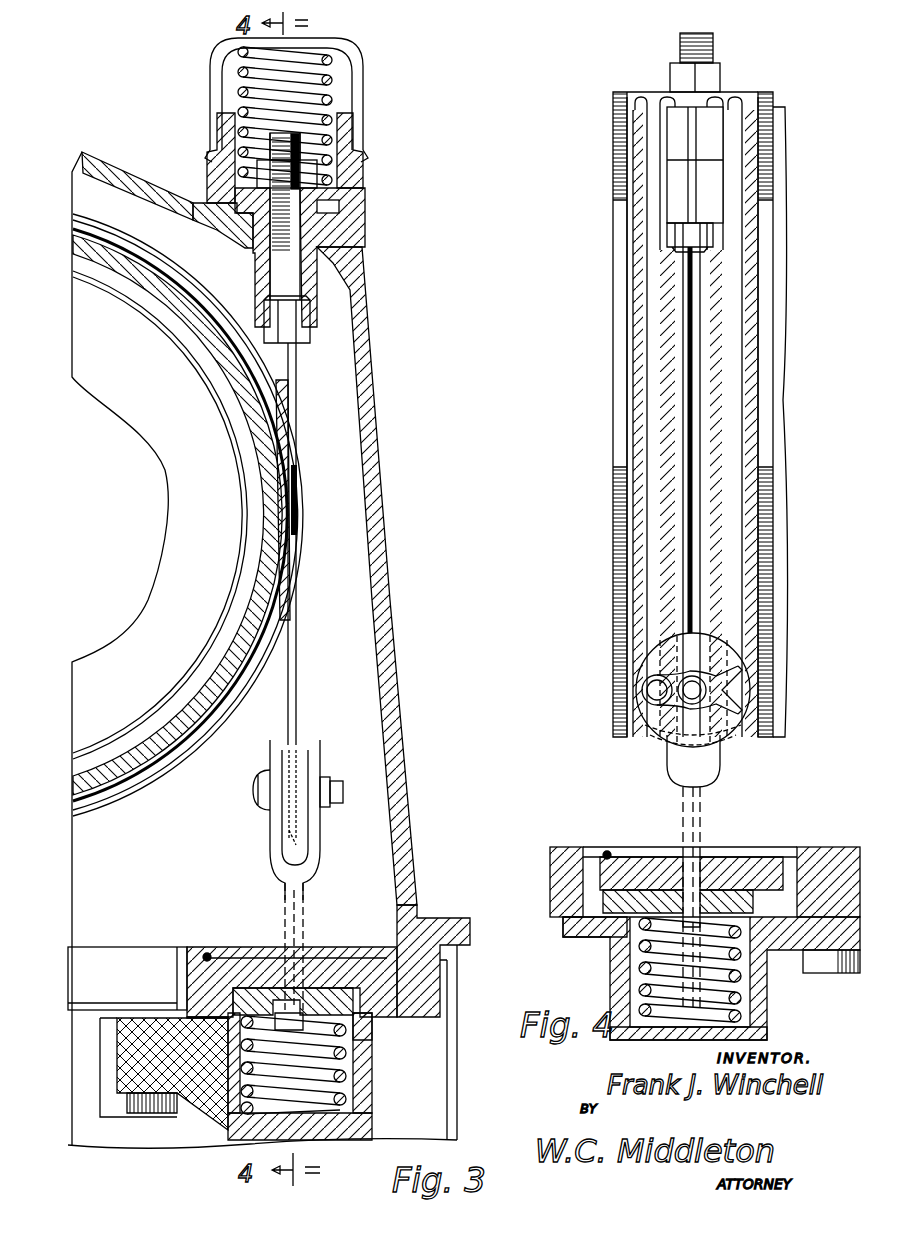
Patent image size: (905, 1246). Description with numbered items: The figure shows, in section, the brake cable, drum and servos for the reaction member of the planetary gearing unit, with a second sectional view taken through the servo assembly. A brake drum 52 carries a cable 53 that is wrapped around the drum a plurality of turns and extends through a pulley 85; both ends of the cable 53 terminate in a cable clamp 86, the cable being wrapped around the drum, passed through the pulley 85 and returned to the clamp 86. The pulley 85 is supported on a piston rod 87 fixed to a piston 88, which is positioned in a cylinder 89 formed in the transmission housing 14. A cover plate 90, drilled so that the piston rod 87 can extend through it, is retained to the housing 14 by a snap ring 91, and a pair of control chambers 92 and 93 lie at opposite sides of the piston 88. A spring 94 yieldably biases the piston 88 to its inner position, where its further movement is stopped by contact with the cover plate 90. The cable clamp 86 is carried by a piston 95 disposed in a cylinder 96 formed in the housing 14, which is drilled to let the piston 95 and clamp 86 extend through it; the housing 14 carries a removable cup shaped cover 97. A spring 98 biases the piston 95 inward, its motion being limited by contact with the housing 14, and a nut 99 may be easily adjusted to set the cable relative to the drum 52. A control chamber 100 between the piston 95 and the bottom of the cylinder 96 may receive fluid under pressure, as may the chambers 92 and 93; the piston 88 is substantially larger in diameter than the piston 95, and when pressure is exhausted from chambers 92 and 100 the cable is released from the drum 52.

In FIG. 3, the transmission housing 14 is at (100, 152).
In FIG. 3, the brake drum 52 is at (164, 303).
In FIG. 4, the brake drum 52 is at (786, 153).
In FIG. 3, the cable 53 is at (305, 520).
In FIG. 4, the cable 53 is at (696, 248).
In FIG. 3, the pulley 85 is at (309, 752).
In FIG. 4, the pulley 85 is at (736, 657).
In FIG. 3, the cable clamp 86 is at (309, 338).
In FIG. 4, the cable clamp 86 is at (668, 234).
In FIG. 3, the piston rod 87 is at (304, 890).
In FIG. 4, the piston rod 87 is at (702, 794).
In FIG. 3, the piston 88 is at (354, 1014).
In FIG. 4, the piston 88 is at (595, 941).
In FIG. 3, the cylinder 89 is at (353, 1090).
In FIG. 3, the cover plate 90 is at (334, 963).
In FIG. 4, the cover plate 90 is at (640, 866).
In FIG. 3, the snap ring 91 is at (208, 954).
In FIG. 4, the snap ring 91 is at (607, 852).
In FIG. 3, the control chamber 92 is at (273, 1000).
In FIG. 4, the control chamber 92 is at (720, 882).
In FIG. 3, the control chamber 93 is at (350, 1107).
In FIG. 4, the control chamber 93 is at (745, 1003).
In FIG. 3, the spring 94 is at (344, 1058).
In FIG. 4, the spring 94 is at (743, 963).
In FIG. 3, the piston 95 is at (338, 201).
In FIG. 4, the piston 95 is at (721, 163).
In FIG. 3, the cylinder 96 is at (340, 110).
In FIG. 3, the cup shaped cover 97 is at (362, 62).
In FIG. 3, the spring 98 is at (240, 68).
In FIG. 3, the nut 99 is at (262, 166).
In FIG. 4, the nut 99 is at (720, 77).
In FIG. 3, the control chamber 100 is at (226, 218).